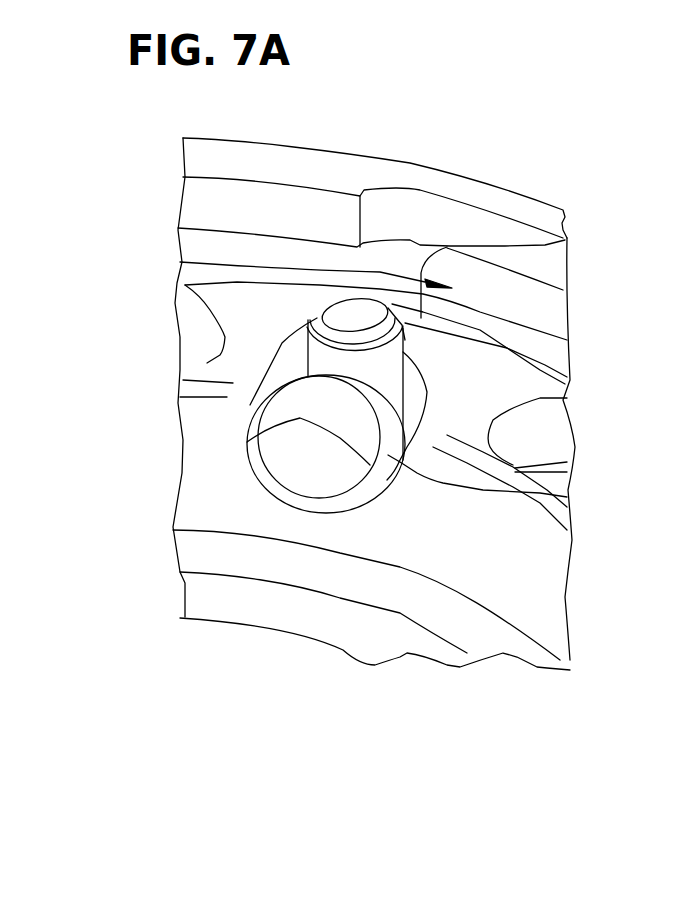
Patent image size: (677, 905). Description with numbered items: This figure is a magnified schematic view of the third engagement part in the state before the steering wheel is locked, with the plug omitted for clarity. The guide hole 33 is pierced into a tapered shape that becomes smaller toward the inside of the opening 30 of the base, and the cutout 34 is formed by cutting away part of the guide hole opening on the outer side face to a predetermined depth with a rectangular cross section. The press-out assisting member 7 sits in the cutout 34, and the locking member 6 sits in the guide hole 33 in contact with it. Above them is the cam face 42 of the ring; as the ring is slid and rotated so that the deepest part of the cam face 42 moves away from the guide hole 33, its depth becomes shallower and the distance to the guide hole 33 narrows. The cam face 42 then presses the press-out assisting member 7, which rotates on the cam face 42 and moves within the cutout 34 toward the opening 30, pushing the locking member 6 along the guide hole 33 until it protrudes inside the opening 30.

The locking member 6 is at (298, 472).
The press-out assisting member 7 is at (316, 318).
The opening 30 is at (530, 585).
The guide hole 33 is at (567, 497).
The cutout 34 is at (310, 332).
The cam face 42 is at (565, 240).